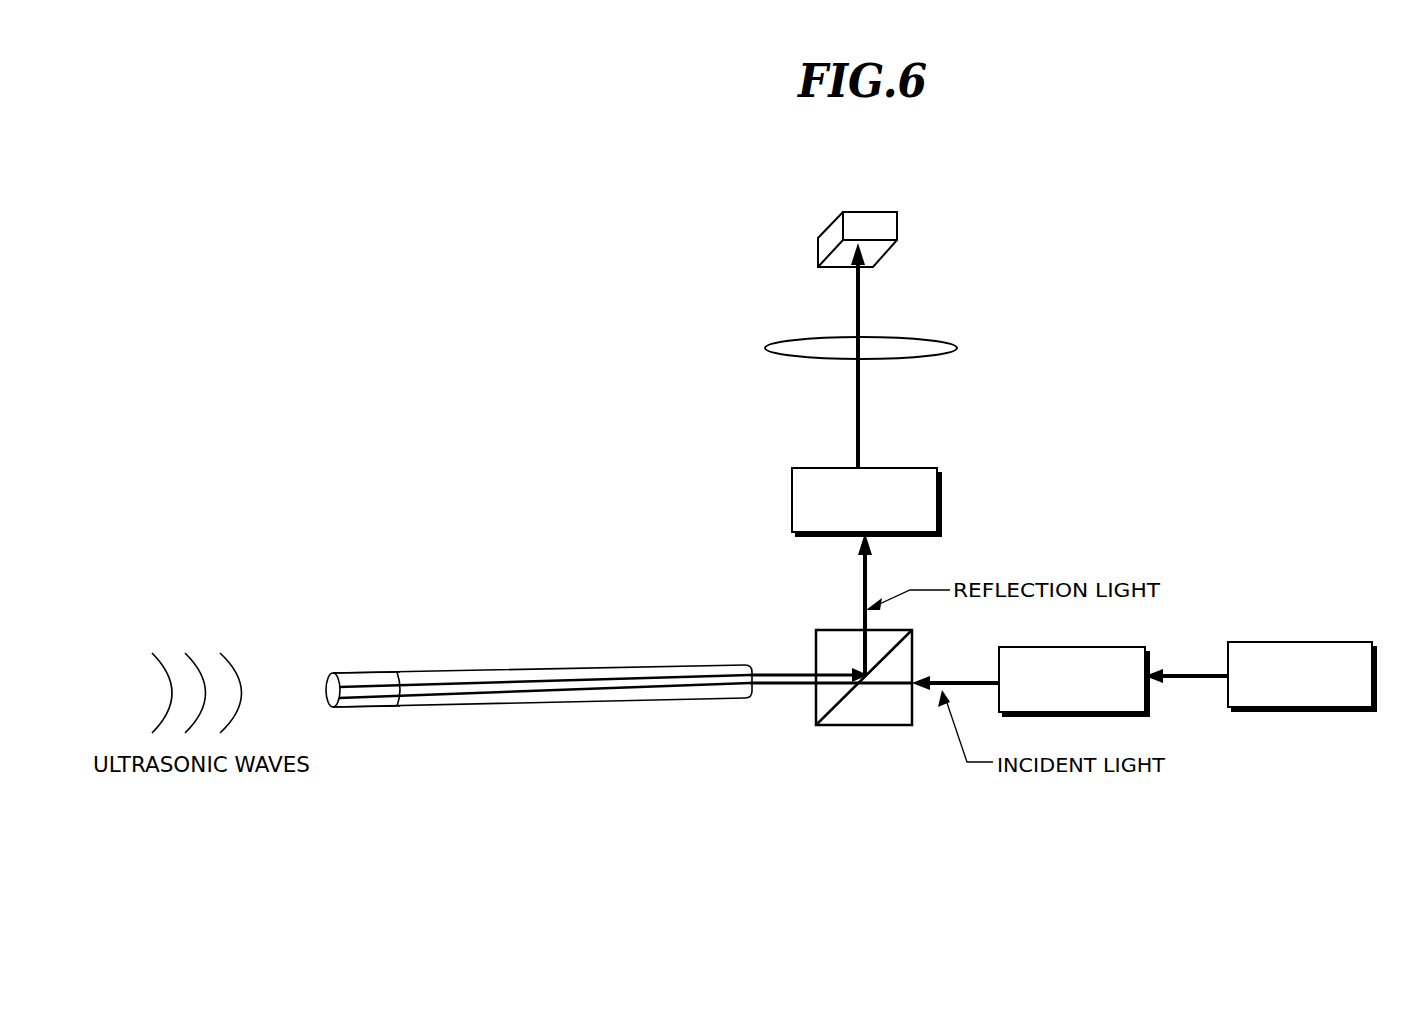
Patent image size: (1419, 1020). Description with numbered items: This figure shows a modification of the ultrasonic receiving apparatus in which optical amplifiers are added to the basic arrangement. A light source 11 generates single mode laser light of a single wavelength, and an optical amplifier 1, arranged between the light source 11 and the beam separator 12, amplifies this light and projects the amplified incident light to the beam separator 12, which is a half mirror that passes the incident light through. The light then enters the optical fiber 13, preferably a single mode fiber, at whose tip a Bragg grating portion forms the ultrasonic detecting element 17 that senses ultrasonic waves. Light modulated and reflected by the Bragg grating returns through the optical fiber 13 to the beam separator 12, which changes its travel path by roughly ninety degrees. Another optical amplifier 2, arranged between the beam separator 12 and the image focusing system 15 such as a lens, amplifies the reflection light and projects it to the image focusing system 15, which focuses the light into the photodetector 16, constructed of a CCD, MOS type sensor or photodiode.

The optical amplifier 1 is at (1125, 646).
The optical amplifier 2 is at (920, 466).
The light source 11 is at (1355, 641).
The beam separator 12 is at (858, 715).
The optical fiber 13 is at (615, 668).
The image focusing system 15 is at (942, 343).
The photodetector 16 is at (884, 212).
The ultrasonic detecting element 17 is at (368, 675).